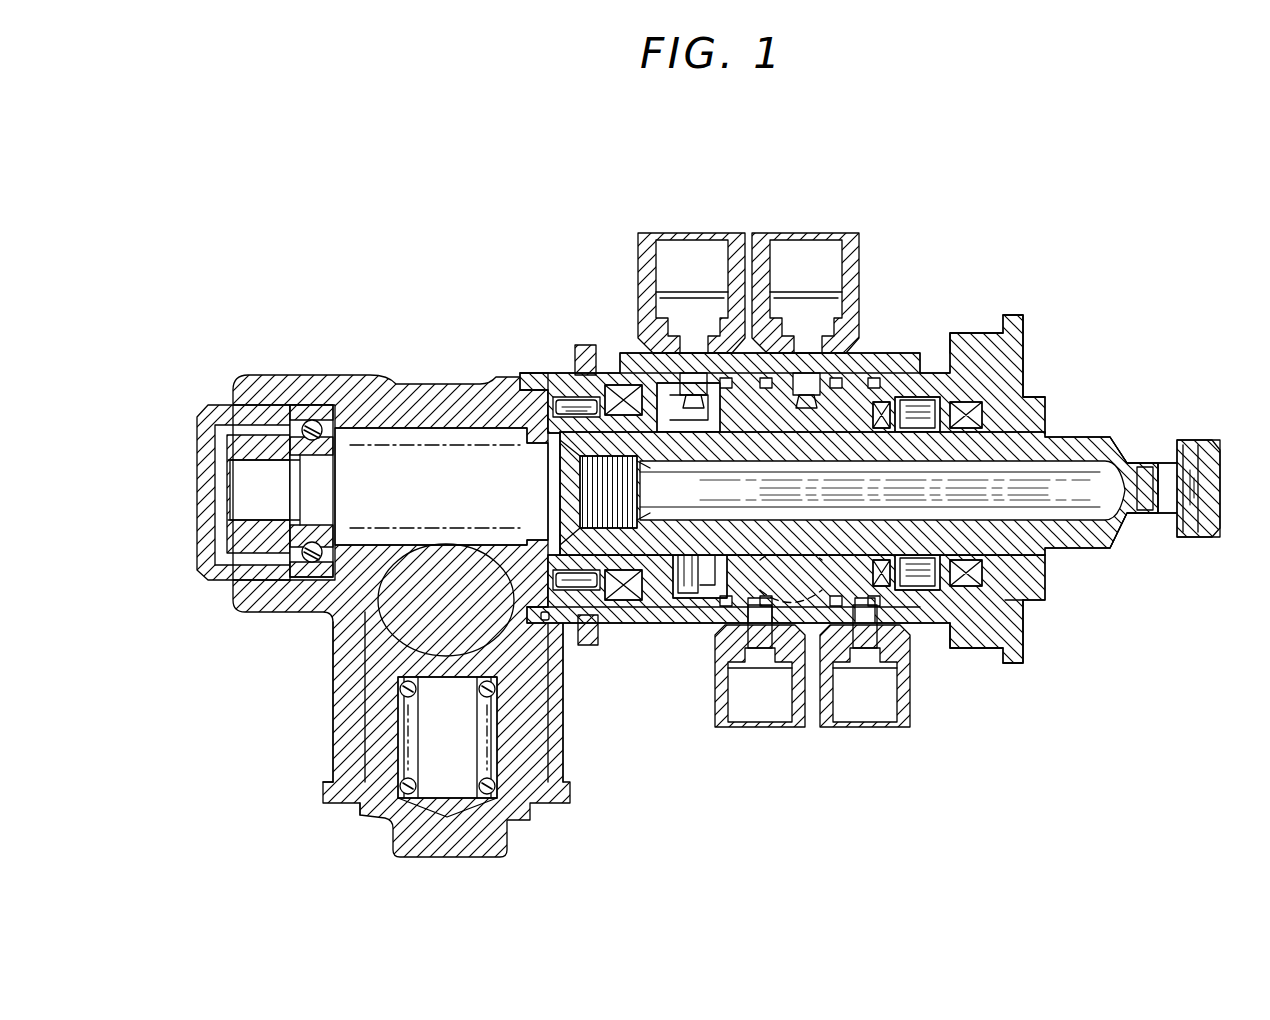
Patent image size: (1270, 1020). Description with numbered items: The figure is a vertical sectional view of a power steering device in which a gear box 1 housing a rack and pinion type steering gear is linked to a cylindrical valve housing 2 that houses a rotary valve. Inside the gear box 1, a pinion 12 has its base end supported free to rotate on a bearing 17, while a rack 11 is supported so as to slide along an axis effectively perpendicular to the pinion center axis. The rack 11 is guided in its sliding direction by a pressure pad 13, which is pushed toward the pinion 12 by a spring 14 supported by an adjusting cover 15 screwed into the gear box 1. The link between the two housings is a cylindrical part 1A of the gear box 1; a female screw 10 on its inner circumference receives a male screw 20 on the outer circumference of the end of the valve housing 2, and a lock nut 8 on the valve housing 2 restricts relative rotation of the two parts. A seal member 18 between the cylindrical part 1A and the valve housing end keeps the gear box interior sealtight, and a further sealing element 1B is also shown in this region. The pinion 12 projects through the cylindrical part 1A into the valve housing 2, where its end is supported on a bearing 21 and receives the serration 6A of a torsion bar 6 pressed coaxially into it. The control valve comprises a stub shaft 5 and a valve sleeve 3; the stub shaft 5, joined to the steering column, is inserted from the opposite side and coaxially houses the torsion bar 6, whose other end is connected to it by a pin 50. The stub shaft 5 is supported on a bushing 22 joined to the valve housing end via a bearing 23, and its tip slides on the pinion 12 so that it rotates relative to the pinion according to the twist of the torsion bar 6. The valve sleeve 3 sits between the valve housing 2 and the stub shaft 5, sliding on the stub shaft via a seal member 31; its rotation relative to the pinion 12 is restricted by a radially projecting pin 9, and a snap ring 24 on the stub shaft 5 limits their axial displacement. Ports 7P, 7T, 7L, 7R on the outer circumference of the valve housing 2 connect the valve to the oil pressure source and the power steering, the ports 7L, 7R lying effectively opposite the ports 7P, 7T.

The gear box 1 is at (275, 372).
The cylindrical part 1A is at (560, 373).
The seal 1B is at (575, 622).
The valve housing 2 is at (966, 333).
The valve sleeve 3 is at (880, 360).
The stub shaft 5 is at (1085, 436).
The torsion bar 6 is at (1076, 498).
The serration 6A is at (560, 448).
The port 7P is at (650, 232).
The port 7T is at (858, 232).
The port 7R is at (722, 726).
The port 7L is at (905, 727).
The lock nut 8 is at (585, 345).
The pin 9 is at (682, 575).
The female screw 10 is at (548, 384).
The rack 11 is at (375, 645).
The pinion 12 is at (402, 428).
The pressure pad 13 is at (378, 675).
The spring 14 is at (480, 790).
The adjusting cover 15 is at (382, 820).
The bearing 17 is at (312, 405).
The seal member 18 is at (560, 660).
The male screw 20 is at (608, 373).
The bearing 21 is at (612, 610).
The bushing 22 is at (1048, 398).
The bearing 23 is at (975, 612).
The snap ring 24 is at (905, 370).
The seal member 31 is at (912, 600).
The pin 50 is at (1196, 440).